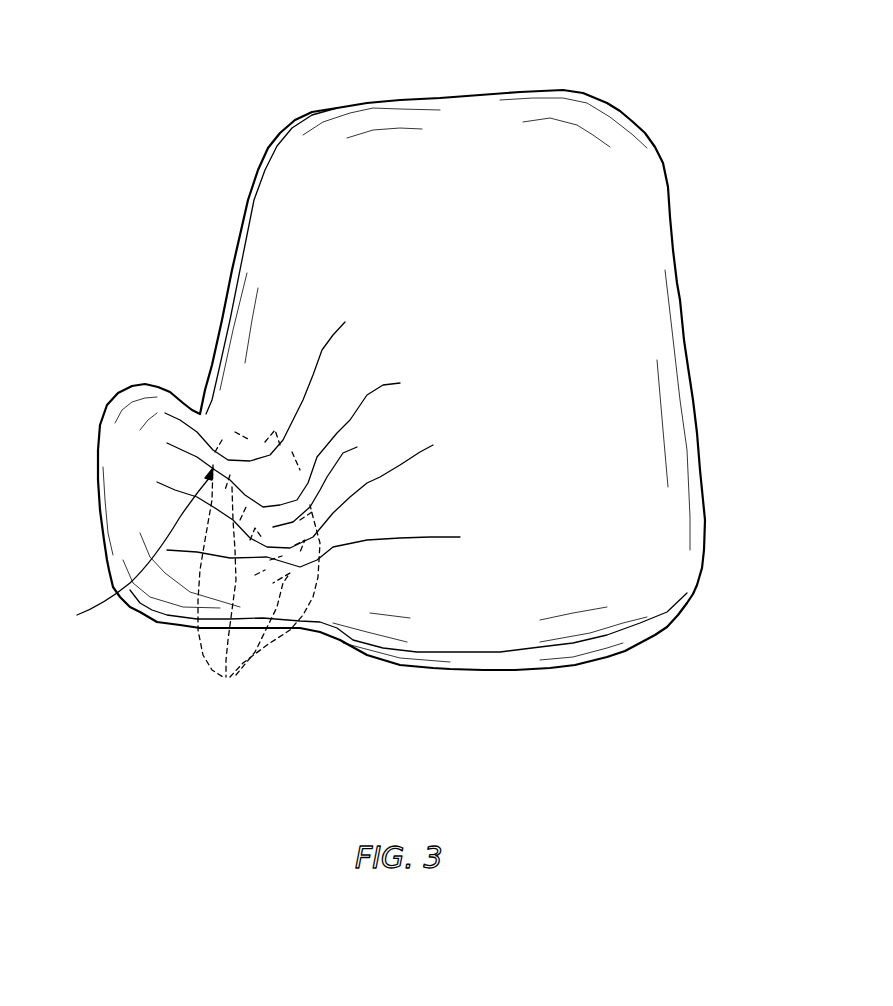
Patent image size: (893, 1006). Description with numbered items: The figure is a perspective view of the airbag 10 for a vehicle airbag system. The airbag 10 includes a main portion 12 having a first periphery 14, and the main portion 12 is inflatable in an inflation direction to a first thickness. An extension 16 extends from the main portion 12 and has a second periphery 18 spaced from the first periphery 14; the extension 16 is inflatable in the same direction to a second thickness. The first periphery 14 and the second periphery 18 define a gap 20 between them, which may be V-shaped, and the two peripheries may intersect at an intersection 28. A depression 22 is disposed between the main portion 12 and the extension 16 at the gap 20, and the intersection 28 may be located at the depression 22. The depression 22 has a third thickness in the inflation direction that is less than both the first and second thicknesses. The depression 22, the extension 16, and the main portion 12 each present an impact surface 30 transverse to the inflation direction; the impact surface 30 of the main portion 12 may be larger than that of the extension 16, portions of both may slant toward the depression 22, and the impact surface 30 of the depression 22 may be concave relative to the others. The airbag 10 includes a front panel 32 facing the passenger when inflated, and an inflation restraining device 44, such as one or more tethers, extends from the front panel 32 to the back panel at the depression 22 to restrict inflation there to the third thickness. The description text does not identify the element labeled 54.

The airbag 10 is at (684, 77).
The main portion 12 is at (633, 238).
The first periphery 14 is at (337, 108).
The extension 16 is at (108, 470).
The second periphery 18 is at (130, 383).
The gap 20 is at (190, 376).
The depression 22 is at (357, 447).
The intersection 28 is at (200, 414).
The impact surface 30 is at (496, 336).
The front panel 32 is at (657, 560).
The inflation restraining device 44 is at (228, 679).
The direction arrow 54 is at (77, 615).